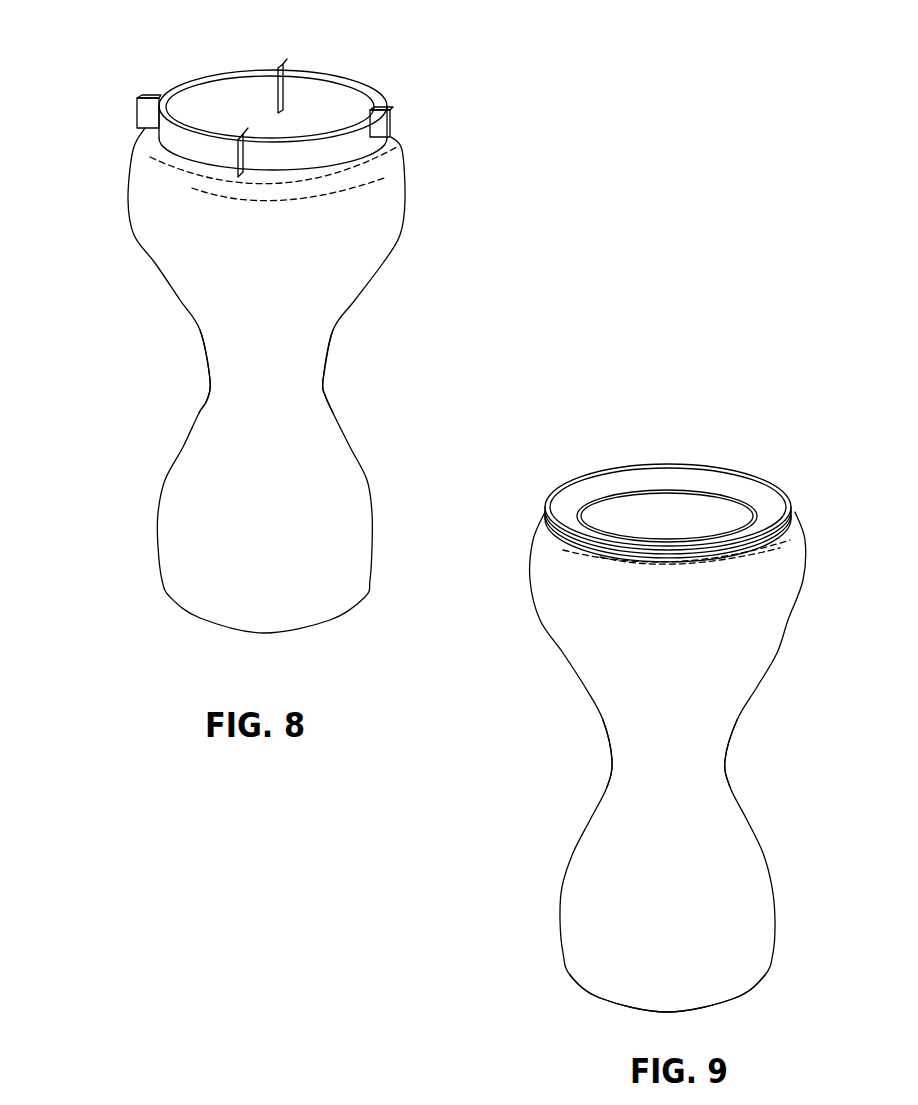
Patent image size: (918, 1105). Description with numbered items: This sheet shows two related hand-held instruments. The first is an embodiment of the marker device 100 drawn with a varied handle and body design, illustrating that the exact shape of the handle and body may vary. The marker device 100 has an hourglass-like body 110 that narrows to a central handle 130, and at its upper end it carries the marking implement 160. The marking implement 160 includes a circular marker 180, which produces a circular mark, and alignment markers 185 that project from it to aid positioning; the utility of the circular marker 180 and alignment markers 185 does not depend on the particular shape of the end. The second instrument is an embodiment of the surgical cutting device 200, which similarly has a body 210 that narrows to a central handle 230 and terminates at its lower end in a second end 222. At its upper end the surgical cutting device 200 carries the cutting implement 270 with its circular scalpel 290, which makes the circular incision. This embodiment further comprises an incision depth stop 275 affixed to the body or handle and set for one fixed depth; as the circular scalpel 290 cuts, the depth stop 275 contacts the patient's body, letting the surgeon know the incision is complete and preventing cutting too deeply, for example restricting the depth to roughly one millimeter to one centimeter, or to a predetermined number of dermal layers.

In FIG. 8, the marker device 100 is at (261, 318).
In FIG. 8, the body 110 is at (153, 497).
In FIG. 8, the central handle 130 is at (190, 375).
In FIG. 8, the marking implement 160 is at (261, 90).
In FIG. 8, the circular marker 180 is at (221, 70).
In FIG. 8, the alignment markers 185 is at (132, 113).
In FIG. 9, the surgical cutting device 200 is at (658, 703).
In FIG. 9, the body 210 is at (555, 882).
In FIG. 9, the second end 222 is at (598, 1007).
In FIG. 9, the central handle 230 is at (598, 748).
In FIG. 9, the cutting implement 270 is at (701, 454).
In FIG. 9, the incision depth stop 275 is at (655, 512).
In FIG. 9, the circular scalpel 290 is at (698, 458).